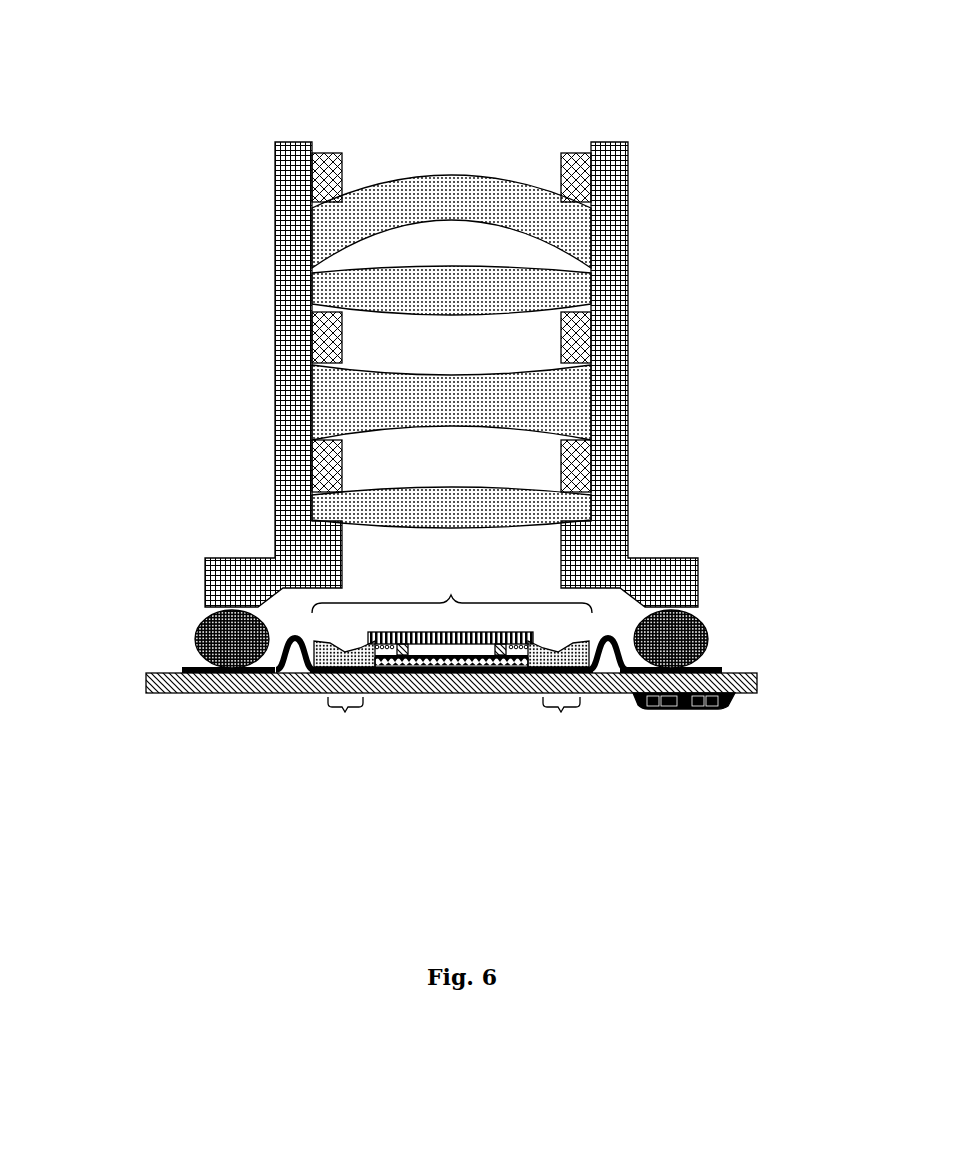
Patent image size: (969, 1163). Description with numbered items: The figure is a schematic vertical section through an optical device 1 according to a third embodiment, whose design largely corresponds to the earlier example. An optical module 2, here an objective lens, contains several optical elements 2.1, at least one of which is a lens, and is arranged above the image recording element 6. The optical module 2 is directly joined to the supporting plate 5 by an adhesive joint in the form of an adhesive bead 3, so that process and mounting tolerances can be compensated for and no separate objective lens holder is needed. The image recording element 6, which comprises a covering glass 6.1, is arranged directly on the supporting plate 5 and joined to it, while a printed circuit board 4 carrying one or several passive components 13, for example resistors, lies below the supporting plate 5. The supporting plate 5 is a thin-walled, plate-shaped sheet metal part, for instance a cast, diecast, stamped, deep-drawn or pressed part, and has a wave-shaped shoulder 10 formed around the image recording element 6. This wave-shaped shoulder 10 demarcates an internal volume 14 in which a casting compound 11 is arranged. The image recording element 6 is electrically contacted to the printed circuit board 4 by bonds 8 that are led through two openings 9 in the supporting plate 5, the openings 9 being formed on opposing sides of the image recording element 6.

The optical device 1 is at (143, 87).
The optical module 2 is at (290, 201).
The optical elements 2.1 is at (510, 508).
The adhesive bead 3 is at (235, 635).
The printed circuit board 4 is at (252, 683).
The supporting plate 5 is at (738, 659).
The image recording element 6 is at (473, 660).
The covering glass 6.1 is at (462, 638).
The bonds 8 is at (565, 662).
The openings 9 is at (454, 733).
The wave-shaped shoulder 10 is at (279, 627).
The casting compound 11 is at (700, 618).
The passive components 13 is at (687, 697).
The internal volume 14 is at (452, 585).